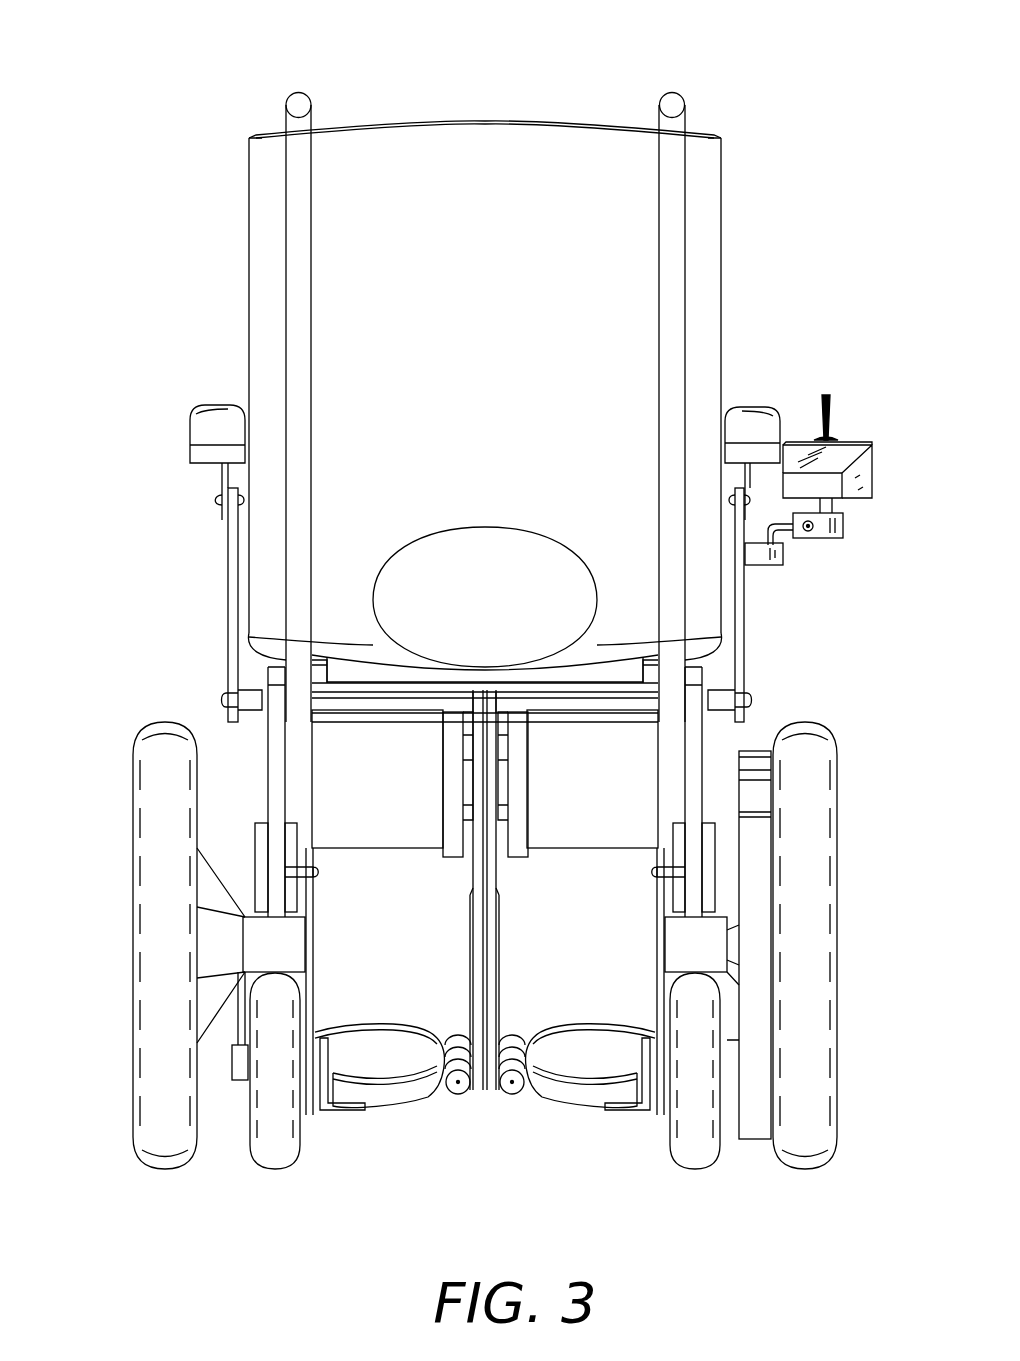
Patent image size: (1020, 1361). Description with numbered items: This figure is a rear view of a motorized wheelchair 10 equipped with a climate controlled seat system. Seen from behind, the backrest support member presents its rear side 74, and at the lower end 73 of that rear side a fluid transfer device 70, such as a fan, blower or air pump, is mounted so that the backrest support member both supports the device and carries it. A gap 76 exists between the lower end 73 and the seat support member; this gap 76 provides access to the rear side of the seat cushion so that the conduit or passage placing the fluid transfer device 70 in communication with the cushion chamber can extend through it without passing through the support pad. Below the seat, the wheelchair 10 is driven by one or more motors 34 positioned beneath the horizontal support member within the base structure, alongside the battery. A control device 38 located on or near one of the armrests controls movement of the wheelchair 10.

The motorized wheelchair 10 is at (160, 160).
The rear side of the backrest support member 74 is at (552, 172).
The control device 38 is at (838, 352).
The fluid transfer device 70 is at (610, 607).
The lower end of the backrest support member 73 is at (340, 628).
The gap 76 is at (317, 672).
The motor 34 is at (386, 862).